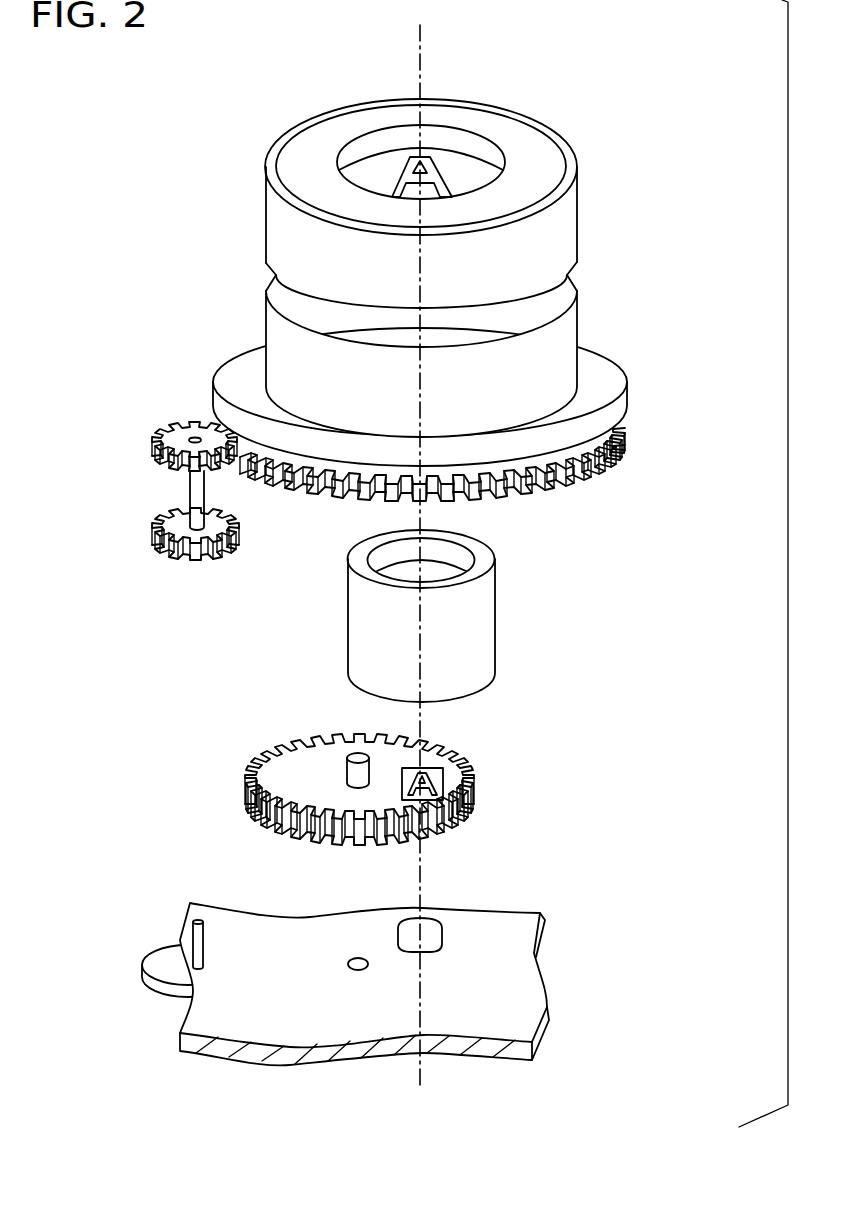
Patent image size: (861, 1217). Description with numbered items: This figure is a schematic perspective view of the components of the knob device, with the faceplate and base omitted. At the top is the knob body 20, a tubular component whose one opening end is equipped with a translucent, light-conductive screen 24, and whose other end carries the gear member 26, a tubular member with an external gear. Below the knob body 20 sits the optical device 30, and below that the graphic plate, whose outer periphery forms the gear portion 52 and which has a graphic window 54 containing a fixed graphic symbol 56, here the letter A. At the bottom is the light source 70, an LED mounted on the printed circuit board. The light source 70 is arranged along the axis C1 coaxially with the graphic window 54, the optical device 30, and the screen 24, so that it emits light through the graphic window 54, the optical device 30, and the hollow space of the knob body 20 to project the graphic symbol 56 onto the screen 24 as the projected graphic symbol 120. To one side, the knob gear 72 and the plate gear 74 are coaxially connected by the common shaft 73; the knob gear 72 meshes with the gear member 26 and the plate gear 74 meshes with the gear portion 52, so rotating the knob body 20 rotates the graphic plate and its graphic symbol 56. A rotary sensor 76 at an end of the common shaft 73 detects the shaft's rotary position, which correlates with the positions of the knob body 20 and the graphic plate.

The axis C1 is at (418, 63).
The knob body 20 is at (566, 226).
The screen 24 is at (483, 170).
The gear member 26 is at (600, 462).
The optical device 30 is at (500, 622).
The gear portion 52 is at (246, 815).
The graphic window 54 is at (439, 773).
The graphic symbol 56 is at (444, 787).
The light source 70 is at (443, 934).
The knob gear 72 is at (157, 462).
The common shaft 73 is at (193, 924).
The plate gear 74 is at (157, 540).
The rotary sensor 76 is at (164, 993).
The projected graphic symbol 120 is at (406, 176).